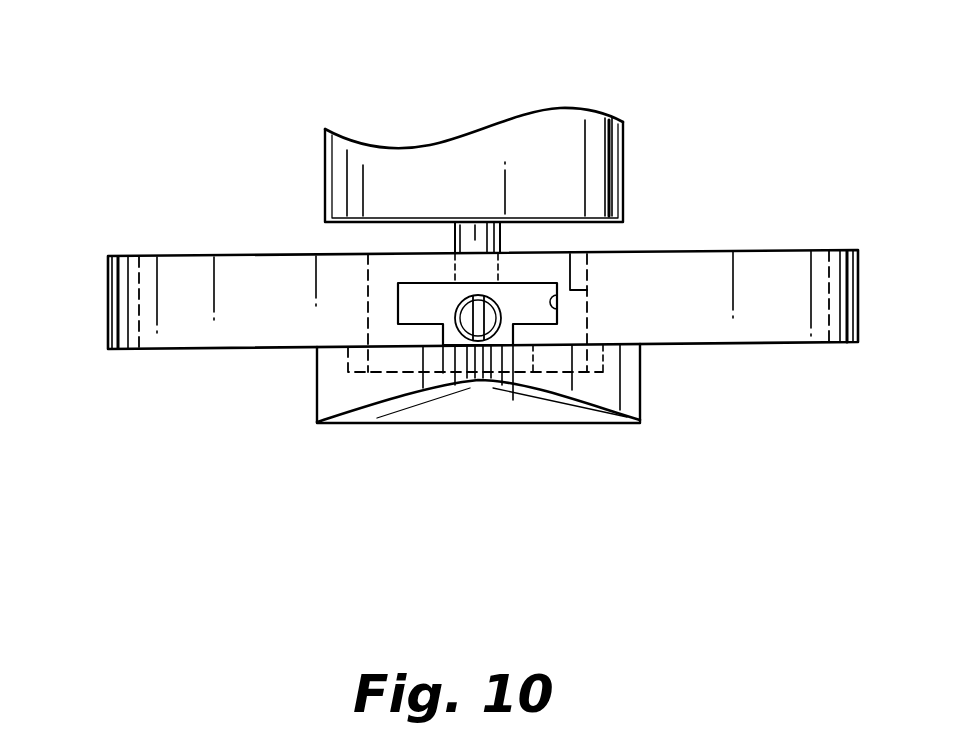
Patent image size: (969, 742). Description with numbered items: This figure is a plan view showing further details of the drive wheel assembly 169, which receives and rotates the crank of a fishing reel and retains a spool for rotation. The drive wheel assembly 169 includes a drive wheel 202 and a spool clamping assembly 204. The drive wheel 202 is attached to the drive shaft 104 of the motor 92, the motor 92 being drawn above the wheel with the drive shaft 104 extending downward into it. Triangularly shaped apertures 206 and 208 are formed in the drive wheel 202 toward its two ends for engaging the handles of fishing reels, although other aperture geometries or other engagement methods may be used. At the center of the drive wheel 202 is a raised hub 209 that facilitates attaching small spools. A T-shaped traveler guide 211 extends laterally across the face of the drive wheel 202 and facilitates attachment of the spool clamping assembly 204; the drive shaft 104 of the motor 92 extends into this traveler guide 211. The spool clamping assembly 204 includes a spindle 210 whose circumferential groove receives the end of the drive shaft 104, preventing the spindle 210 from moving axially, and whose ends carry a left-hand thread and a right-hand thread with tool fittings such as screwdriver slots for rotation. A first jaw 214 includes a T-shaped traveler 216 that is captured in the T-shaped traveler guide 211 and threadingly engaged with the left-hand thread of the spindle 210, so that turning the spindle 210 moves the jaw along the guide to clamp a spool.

The motor 92 is at (552, 122).
The drive shaft 104 is at (460, 240).
The drive wheel assembly 169 is at (172, 540).
The drive wheel 202 is at (108, 278).
The spool clamping assembly 204 is at (295, 450).
The triangularly shaped aperture 206 is at (182, 318).
The triangularly shaped aperture 208 is at (763, 308).
The raised hub 209 is at (362, 378).
The spindle 210 is at (492, 328).
The T-shaped traveler guide 211 is at (577, 291).
The first jaw 214 is at (628, 395).
The T-shaped traveler 216 is at (407, 307).